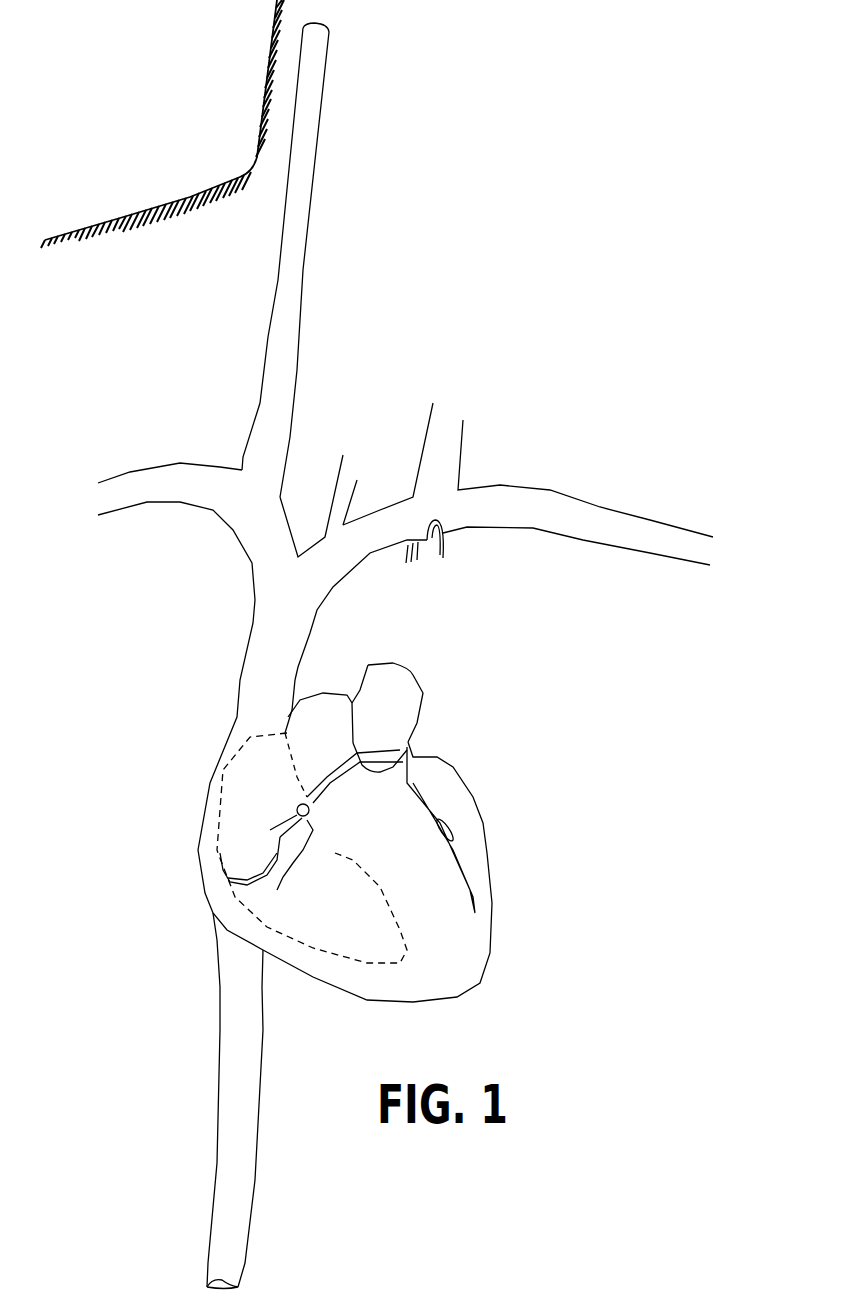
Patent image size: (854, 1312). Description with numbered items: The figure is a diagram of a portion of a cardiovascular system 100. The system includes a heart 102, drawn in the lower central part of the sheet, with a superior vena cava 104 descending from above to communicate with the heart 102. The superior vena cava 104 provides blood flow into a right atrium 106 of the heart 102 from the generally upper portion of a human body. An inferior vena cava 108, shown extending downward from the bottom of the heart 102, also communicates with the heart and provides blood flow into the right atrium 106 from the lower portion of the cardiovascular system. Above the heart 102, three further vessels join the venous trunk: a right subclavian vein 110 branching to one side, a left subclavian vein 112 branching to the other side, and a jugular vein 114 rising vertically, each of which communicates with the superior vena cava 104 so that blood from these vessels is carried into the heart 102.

The cardiovascular system 100 is at (582, 142).
The heart 102 is at (452, 805).
The superior vena cava 104 is at (263, 657).
The right atrium 106 is at (245, 788).
The inferior vena cava 108 is at (245, 1067).
The right subclavian vein 110 is at (188, 488).
The left subclavian vein 112 is at (563, 508).
The jugular vein 114 is at (302, 225).